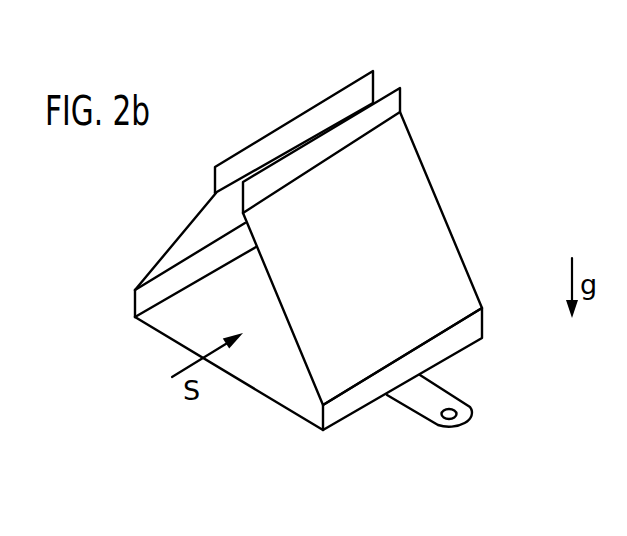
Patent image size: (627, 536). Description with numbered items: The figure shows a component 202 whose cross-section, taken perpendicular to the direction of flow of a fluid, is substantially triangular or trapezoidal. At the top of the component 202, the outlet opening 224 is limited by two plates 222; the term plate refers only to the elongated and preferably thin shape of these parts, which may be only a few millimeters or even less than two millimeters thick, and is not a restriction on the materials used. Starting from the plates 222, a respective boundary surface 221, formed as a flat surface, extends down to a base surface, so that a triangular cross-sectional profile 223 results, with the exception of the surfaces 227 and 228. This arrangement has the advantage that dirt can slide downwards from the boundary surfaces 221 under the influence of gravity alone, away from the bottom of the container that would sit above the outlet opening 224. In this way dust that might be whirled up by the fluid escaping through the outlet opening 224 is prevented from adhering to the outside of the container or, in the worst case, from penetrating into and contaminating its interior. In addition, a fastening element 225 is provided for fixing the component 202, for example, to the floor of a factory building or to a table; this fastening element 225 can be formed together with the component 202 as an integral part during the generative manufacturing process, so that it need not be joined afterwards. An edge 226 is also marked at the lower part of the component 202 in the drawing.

The component 202 is at (152, 360).
The boundary surface 221 is at (177, 240).
The plate 222 is at (331, 97).
The triangular cross-sectional profile 223 is at (192, 307).
The outlet opening 224 is at (233, 182).
The fastening element 225 is at (440, 396).
The lower edge 226 is at (282, 404).
The surface 227 is at (478, 325).
The surface 228 is at (140, 302).